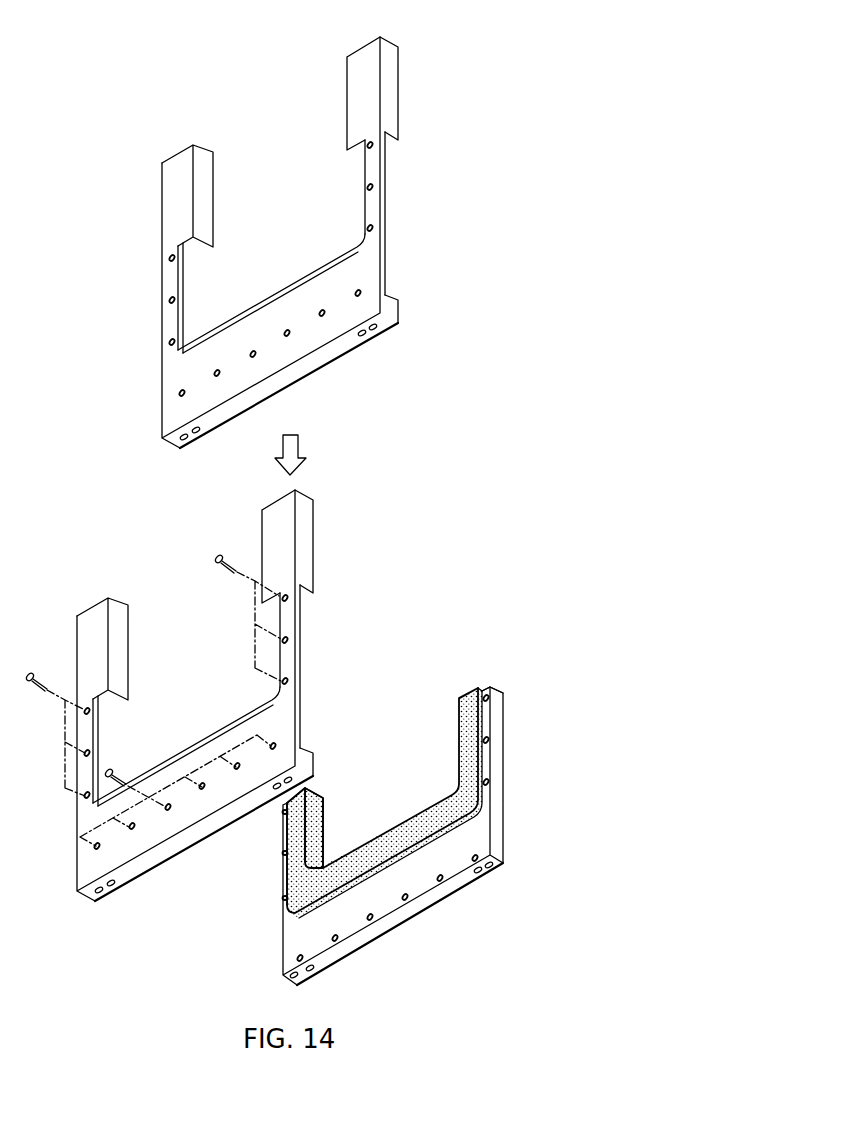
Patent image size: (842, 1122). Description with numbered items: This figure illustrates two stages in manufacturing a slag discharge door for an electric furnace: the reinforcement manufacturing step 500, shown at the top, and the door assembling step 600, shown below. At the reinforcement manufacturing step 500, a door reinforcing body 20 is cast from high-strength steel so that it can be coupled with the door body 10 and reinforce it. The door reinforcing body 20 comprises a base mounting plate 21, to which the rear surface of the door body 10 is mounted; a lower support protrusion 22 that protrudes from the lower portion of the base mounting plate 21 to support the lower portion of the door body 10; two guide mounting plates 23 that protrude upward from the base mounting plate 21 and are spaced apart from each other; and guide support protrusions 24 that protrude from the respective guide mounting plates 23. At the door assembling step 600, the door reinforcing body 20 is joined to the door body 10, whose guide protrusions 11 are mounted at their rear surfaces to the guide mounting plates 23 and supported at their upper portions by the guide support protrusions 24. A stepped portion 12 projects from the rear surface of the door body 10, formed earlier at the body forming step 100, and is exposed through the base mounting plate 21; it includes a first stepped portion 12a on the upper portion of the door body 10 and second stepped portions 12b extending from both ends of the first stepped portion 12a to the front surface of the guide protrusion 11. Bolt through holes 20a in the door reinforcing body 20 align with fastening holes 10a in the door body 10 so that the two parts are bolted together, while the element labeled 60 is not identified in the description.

The door body 10 is at (396, 810).
The fastening hole 10a is at (489, 782).
The guide protrusion 11 is at (482, 690).
The stepped portion 12 is at (384, 803).
The first stepped portion 12a is at (427, 845).
The second stepped portion 12b is at (477, 720).
The door reinforcing body 20 is at (237, 433).
The bolt through hole 20a is at (358, 296).
The base mounting plate 21 is at (290, 300).
The lower support protrusion 22 is at (393, 298).
The guide mounting plate 23 is at (377, 210).
The guide support protrusion 24 is at (393, 94).
The fixing member 60 is at (305, 842).
The body forming step 100 is at (243, 956).
The reinforcement manufacturing step 500 is at (418, 58).
The door assembling step 600 is at (408, 486).